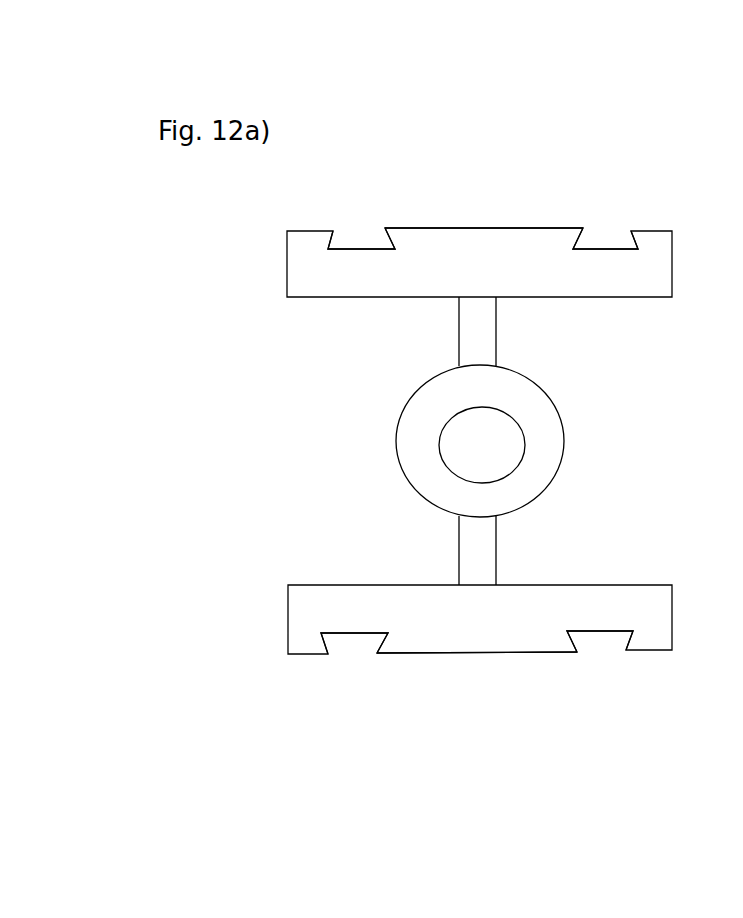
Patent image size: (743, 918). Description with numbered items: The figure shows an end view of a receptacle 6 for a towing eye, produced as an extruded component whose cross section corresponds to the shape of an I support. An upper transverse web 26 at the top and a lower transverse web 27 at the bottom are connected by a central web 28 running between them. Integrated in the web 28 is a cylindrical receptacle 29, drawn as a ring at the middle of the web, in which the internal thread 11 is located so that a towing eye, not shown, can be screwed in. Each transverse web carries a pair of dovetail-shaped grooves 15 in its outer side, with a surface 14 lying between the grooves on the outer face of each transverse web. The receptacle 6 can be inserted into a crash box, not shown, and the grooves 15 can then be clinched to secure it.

The receptacle 6 is at (547, 156).
The internal thread 11 is at (493, 453).
The contact surface 14 is at (435, 228).
The groove 15 is at (355, 238).
The upper transverse web 26 is at (656, 272).
The lower transverse web 27 is at (657, 615).
The web 28 is at (477, 333).
The cylindrical receptacle 29 is at (542, 467).